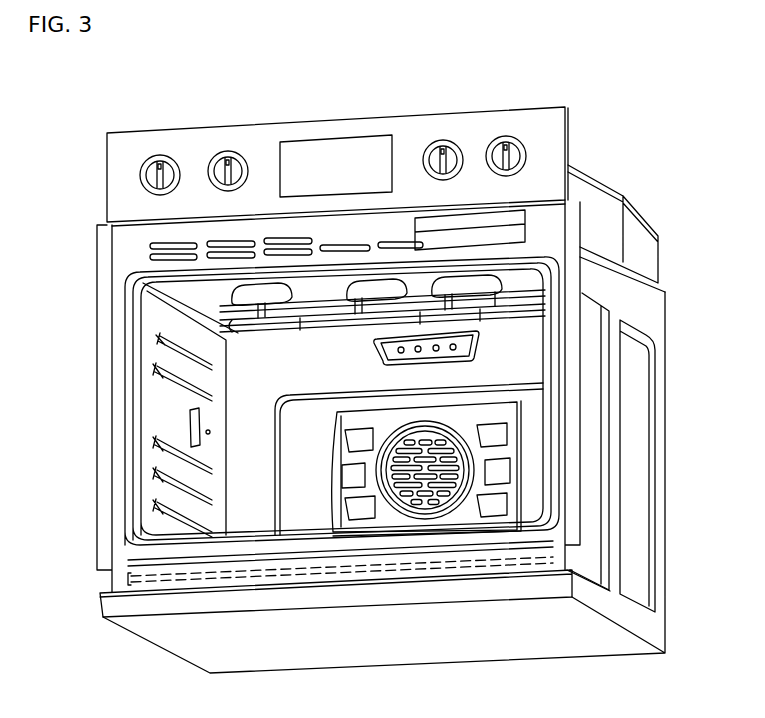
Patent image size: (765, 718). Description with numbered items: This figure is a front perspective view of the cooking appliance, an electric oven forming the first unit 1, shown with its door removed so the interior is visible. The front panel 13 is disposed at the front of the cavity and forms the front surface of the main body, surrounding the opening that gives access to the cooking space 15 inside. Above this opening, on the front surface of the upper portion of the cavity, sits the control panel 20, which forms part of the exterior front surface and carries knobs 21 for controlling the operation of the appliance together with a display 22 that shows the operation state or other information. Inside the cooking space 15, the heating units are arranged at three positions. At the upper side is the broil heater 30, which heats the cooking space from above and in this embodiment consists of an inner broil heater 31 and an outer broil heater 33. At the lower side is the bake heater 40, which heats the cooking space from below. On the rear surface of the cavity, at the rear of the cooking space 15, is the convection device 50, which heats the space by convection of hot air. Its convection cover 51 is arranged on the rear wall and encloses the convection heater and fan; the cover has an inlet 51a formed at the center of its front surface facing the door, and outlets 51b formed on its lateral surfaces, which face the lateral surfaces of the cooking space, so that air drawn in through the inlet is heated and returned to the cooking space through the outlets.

The first unit 1 is at (88, 106).
The front panel 13 is at (128, 245).
The cooking space 15 is at (253, 443).
The control panel 20 is at (405, 136).
The knob 21 is at (220, 167).
The display 22 is at (333, 153).
The broil heater 30 is at (519, 286).
The inner broil heater 31 is at (283, 318).
The outer broil heater 33 is at (268, 326).
The bake heater 40 is at (553, 558).
The convection device 50 is at (533, 421).
The convection cover 51 is at (465, 415).
The inlet 51a is at (457, 460).
The outlet 51b is at (527, 475).